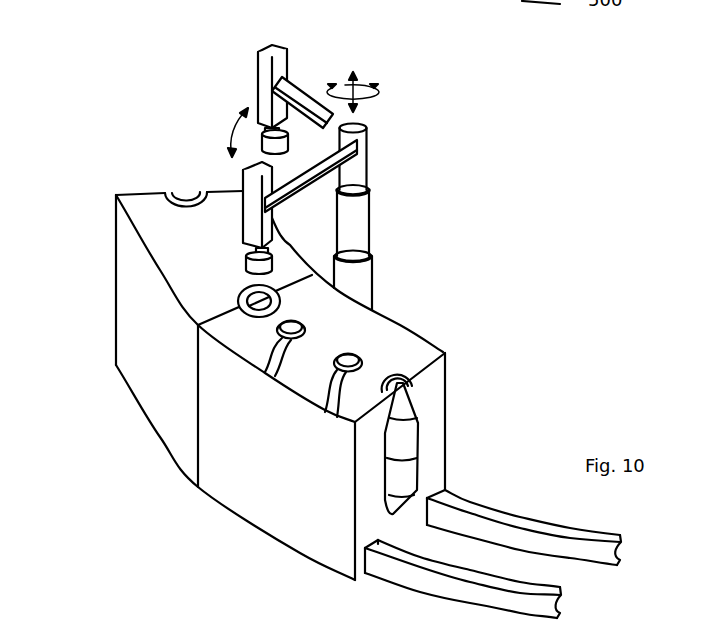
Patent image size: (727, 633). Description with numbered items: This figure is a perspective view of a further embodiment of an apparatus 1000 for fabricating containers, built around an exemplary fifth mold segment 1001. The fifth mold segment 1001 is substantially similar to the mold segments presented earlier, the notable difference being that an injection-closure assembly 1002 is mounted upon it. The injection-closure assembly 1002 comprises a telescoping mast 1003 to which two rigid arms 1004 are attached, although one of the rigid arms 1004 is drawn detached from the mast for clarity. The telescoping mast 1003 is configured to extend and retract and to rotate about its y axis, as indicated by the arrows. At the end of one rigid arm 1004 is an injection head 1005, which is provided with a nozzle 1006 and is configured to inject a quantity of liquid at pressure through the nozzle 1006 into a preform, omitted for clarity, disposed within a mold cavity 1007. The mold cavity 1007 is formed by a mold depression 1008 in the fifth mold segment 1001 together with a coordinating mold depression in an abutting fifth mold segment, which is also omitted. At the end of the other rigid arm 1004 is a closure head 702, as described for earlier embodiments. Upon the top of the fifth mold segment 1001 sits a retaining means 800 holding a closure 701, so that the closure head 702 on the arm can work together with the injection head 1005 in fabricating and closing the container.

The apparatus 1000 is at (152, 104).
The fifth mold segment 1001 is at (247, 518).
The injection-closure assembly 1002 is at (445, 72).
The telescoping mast 1003 is at (362, 283).
The rigid arm 1004 is at (357, 156).
The injection head 1005 is at (253, 235).
The nozzle 1006 is at (247, 258).
The mold cavity 1007 is at (397, 478).
The mold depression 1008 is at (413, 399).
The closure head 702 is at (273, 48).
The closure 701 is at (263, 372).
The retaining means 800 is at (275, 377).